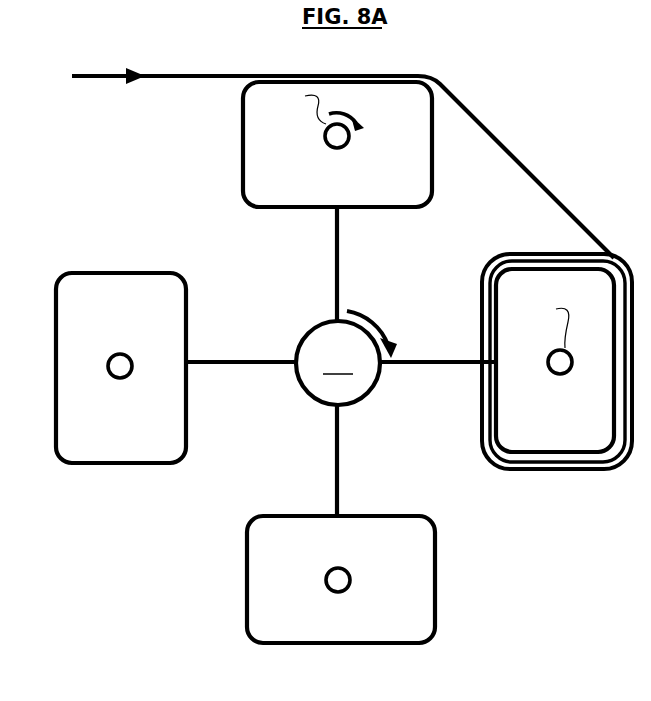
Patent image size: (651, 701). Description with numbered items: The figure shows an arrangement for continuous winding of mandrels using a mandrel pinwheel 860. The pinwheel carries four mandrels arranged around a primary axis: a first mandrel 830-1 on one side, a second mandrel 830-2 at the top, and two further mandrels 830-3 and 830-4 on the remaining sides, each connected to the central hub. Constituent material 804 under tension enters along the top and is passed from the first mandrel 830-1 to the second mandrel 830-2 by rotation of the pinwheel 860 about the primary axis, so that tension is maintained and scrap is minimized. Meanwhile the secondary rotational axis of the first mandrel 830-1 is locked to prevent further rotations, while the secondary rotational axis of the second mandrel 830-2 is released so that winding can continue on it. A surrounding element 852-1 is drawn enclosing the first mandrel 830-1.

The constituent material 804 is at (168, 74).
The mandrel pinwheel 860 is at (106, 176).
The heating / retaining shroud 852-1 is at (482, 274).
The first mandrel 830-1 is at (535, 424).
The second mandrel 830-2 is at (310, 186).
The third station 830-3 is at (93, 432).
The fourth station 830-4 is at (366, 630).